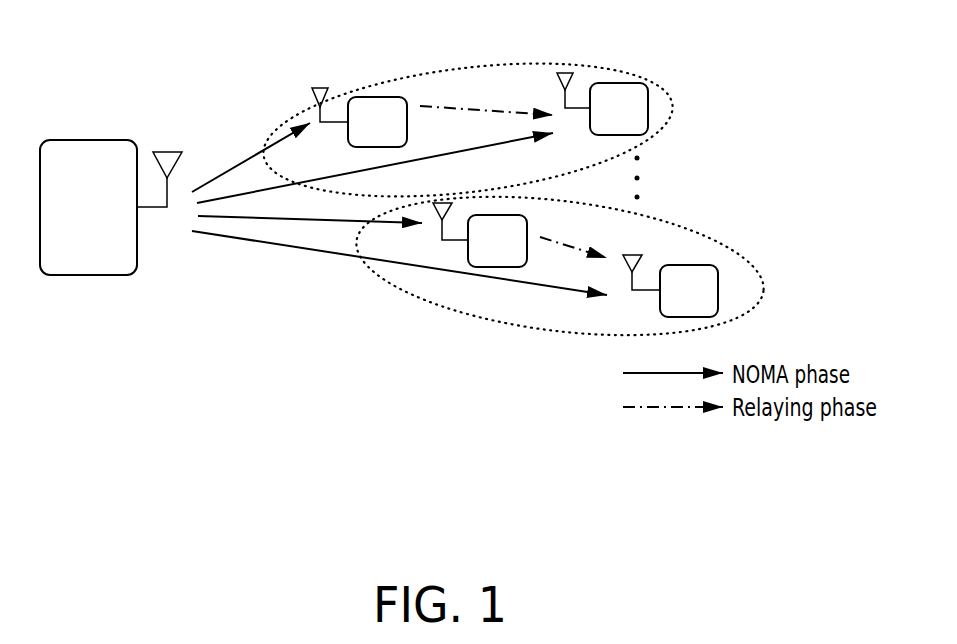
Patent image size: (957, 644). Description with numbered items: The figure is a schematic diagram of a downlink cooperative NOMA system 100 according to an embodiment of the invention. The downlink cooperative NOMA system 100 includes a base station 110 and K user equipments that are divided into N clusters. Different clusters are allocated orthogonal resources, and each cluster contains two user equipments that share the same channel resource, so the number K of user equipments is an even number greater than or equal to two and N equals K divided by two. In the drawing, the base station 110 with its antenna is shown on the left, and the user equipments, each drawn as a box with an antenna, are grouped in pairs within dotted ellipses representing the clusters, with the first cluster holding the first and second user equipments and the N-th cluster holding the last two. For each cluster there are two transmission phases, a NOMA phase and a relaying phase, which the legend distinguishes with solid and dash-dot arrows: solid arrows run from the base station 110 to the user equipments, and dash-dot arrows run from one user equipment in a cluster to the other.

The downlink cooperative NOMA system 100 is at (232, 368).
The base station 110 is at (88, 140).